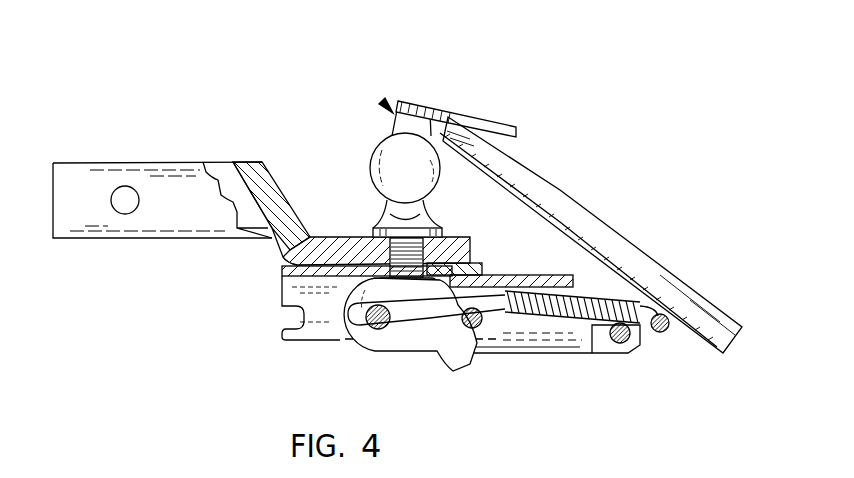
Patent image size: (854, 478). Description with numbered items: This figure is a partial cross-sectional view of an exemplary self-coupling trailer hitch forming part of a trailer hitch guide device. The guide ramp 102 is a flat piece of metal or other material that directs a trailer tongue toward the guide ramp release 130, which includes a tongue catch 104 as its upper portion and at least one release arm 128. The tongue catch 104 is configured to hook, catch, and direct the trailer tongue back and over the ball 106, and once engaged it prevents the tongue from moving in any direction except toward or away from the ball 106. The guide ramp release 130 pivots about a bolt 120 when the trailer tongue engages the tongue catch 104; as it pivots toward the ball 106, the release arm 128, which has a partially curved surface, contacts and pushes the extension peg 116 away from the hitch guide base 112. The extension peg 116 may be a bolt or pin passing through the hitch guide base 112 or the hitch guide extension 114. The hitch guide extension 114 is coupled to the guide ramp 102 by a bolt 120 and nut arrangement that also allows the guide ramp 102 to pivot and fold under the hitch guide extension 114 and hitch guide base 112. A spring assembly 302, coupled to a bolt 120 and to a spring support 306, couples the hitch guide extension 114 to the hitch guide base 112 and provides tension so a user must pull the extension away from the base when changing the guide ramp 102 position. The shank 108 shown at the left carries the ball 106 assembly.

The guide ramp 102 is at (565, 223).
The tongue catch 104 is at (430, 105).
The ball 106 is at (375, 148).
The ball mount shank 108 is at (253, 162).
The hitch guide base 112 is at (293, 297).
The hitch guide extension 114 is at (539, 333).
The extension peg 116 is at (482, 328).
The bolt 120 is at (369, 325).
The release arm 128 is at (450, 368).
The guide ramp release 130 is at (385, 103).
The spring assembly 302 is at (574, 330).
The spring support 306 is at (666, 333).